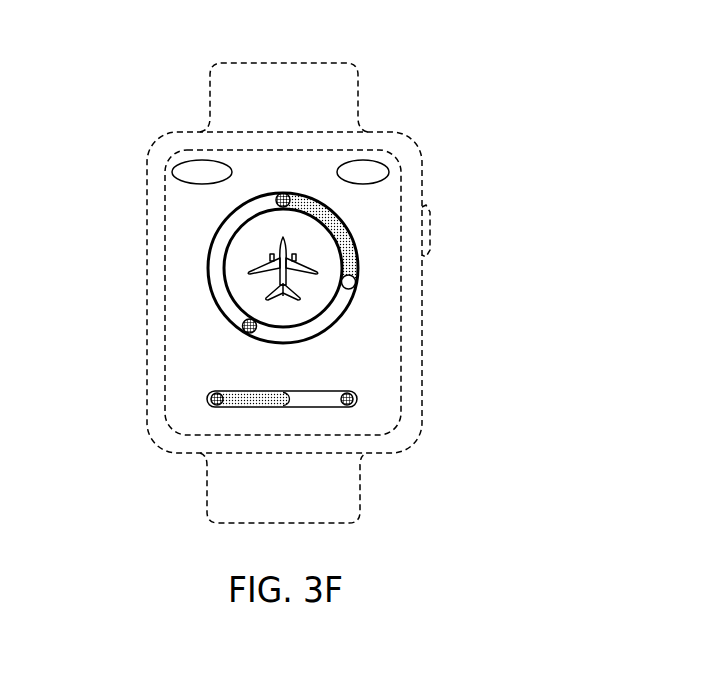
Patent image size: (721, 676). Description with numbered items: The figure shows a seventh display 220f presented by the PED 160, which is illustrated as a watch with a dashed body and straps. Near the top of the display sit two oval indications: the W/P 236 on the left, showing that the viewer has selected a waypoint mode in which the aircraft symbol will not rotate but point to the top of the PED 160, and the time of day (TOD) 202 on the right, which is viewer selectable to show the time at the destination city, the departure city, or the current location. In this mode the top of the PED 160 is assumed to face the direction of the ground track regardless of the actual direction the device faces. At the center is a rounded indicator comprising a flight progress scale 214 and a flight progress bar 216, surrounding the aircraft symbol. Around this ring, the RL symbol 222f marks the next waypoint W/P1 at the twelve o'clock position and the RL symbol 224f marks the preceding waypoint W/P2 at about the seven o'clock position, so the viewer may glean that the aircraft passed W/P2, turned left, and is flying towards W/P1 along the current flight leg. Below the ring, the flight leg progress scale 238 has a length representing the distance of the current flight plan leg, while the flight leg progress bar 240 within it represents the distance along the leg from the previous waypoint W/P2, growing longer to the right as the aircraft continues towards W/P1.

The PED 160 is at (328, 63).
The seventh display 220f is at (330, 150).
The time of day (TOD) 202 is at (377, 162).
The RL symbol 222f is at (293, 194).
The flight progress bar 216 is at (352, 276).
The flight progress scale 214 is at (345, 298).
The W/P 236 is at (184, 182).
The RL symbol 224f is at (243, 323).
The flight leg progress scale 238 is at (323, 407).
The flight leg progress bar 240 is at (267, 407).